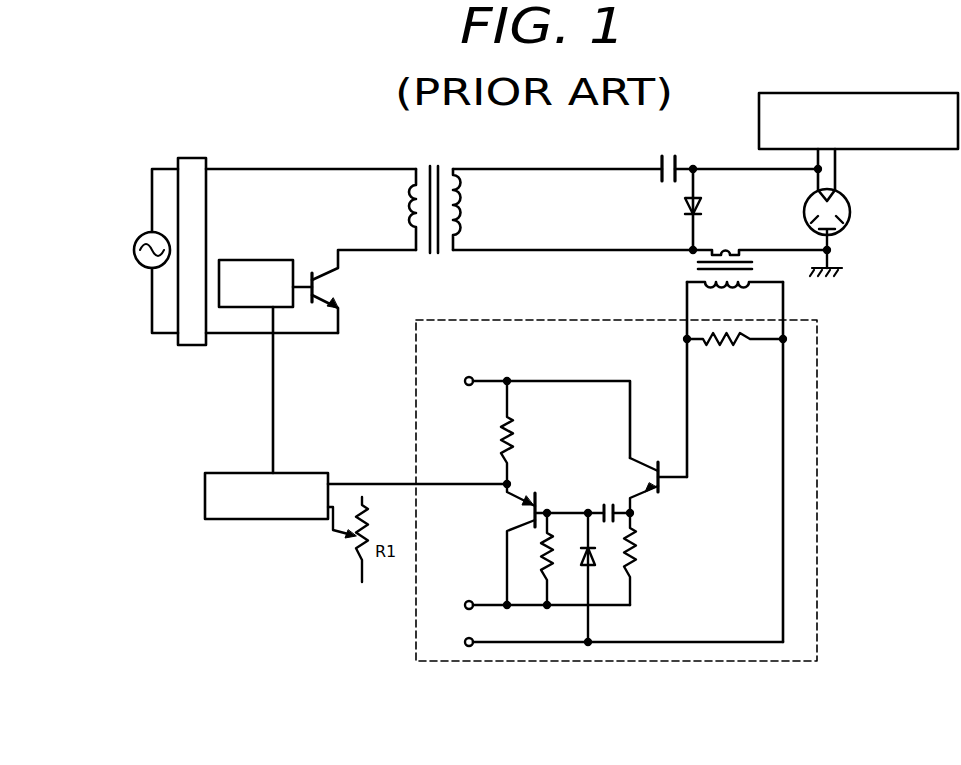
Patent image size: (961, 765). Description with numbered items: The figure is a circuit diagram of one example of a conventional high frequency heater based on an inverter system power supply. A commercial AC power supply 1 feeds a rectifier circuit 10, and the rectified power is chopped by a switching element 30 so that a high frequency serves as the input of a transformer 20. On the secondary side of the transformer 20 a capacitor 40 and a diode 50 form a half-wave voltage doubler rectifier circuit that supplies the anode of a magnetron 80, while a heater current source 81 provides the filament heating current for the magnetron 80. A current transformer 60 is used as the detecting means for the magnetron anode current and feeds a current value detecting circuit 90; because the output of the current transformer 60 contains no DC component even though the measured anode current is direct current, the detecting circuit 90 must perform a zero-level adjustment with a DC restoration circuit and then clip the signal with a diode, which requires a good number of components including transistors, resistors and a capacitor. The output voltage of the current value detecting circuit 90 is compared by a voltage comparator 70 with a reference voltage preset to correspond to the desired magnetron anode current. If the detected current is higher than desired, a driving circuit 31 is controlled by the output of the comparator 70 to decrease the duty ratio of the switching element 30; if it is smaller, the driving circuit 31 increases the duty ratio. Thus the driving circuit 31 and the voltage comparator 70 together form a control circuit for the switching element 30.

The commercial AC power supply 1 is at (137, 240).
The rectifier circuit 10 is at (206, 200).
The transformer 20 is at (438, 165).
The switching element 30 is at (340, 285).
The driving circuit 31 is at (270, 259).
The capacitor 40 is at (667, 153).
The diode 50 is at (703, 210).
The current transformer 60 is at (697, 268).
The voltage comparator 70 is at (288, 520).
The magnetron 80 is at (840, 214).
The heater current source 81 is at (818, 93).
The current value detecting circuit 90 is at (817, 395).